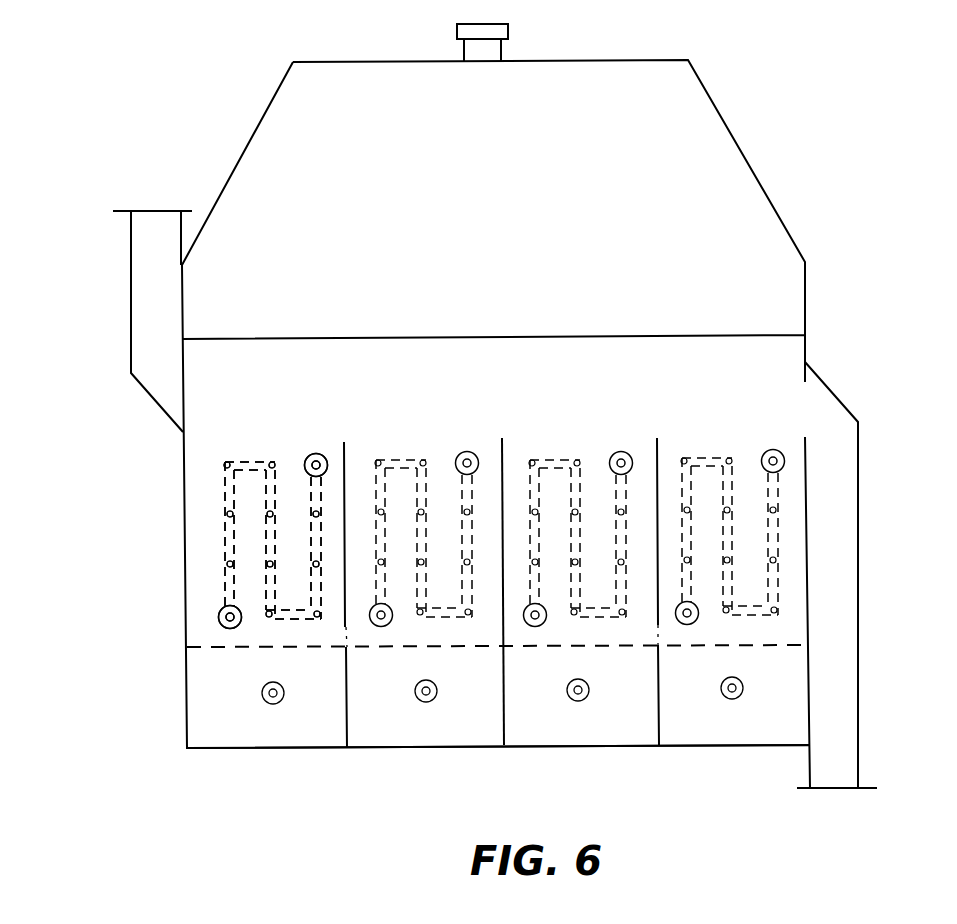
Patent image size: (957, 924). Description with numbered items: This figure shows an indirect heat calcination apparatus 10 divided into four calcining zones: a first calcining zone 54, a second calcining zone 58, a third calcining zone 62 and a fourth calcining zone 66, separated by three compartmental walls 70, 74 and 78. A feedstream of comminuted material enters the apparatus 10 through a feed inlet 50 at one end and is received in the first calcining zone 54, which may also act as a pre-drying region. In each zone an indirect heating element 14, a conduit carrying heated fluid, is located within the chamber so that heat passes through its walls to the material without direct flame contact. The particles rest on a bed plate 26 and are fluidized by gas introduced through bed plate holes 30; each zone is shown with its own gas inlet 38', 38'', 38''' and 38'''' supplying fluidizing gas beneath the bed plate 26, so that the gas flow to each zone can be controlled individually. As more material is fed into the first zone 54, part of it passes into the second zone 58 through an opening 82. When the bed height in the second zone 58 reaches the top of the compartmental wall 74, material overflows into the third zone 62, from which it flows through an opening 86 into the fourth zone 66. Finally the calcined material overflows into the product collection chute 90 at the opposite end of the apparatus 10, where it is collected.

The indirect heat calcination apparatus 10 is at (898, 97).
The indirect heating element 14 is at (225, 490).
The bed plate 26 is at (787, 642).
The bed plate holes 30 is at (778, 652).
The gas inlet 38' is at (185, 709).
The gas inlet 38'' is at (398, 738).
The gas inlet 38''' is at (609, 732).
The gas inlet 38'''' is at (830, 707).
The feed inlet 50 is at (142, 266).
The first calcining zone 54 is at (280, 439).
The second calcining zone 58 is at (437, 440).
The third calcining zone 62 is at (592, 440).
The fourth calcining zone 66 is at (742, 432).
The compartmental wall 70 is at (345, 441).
The compartmental wall 74 is at (502, 440).
The compartmental wall 78 is at (657, 440).
The opening 82 is at (345, 631).
The opening 86 is at (655, 632).
The product collection chute 90 is at (830, 412).